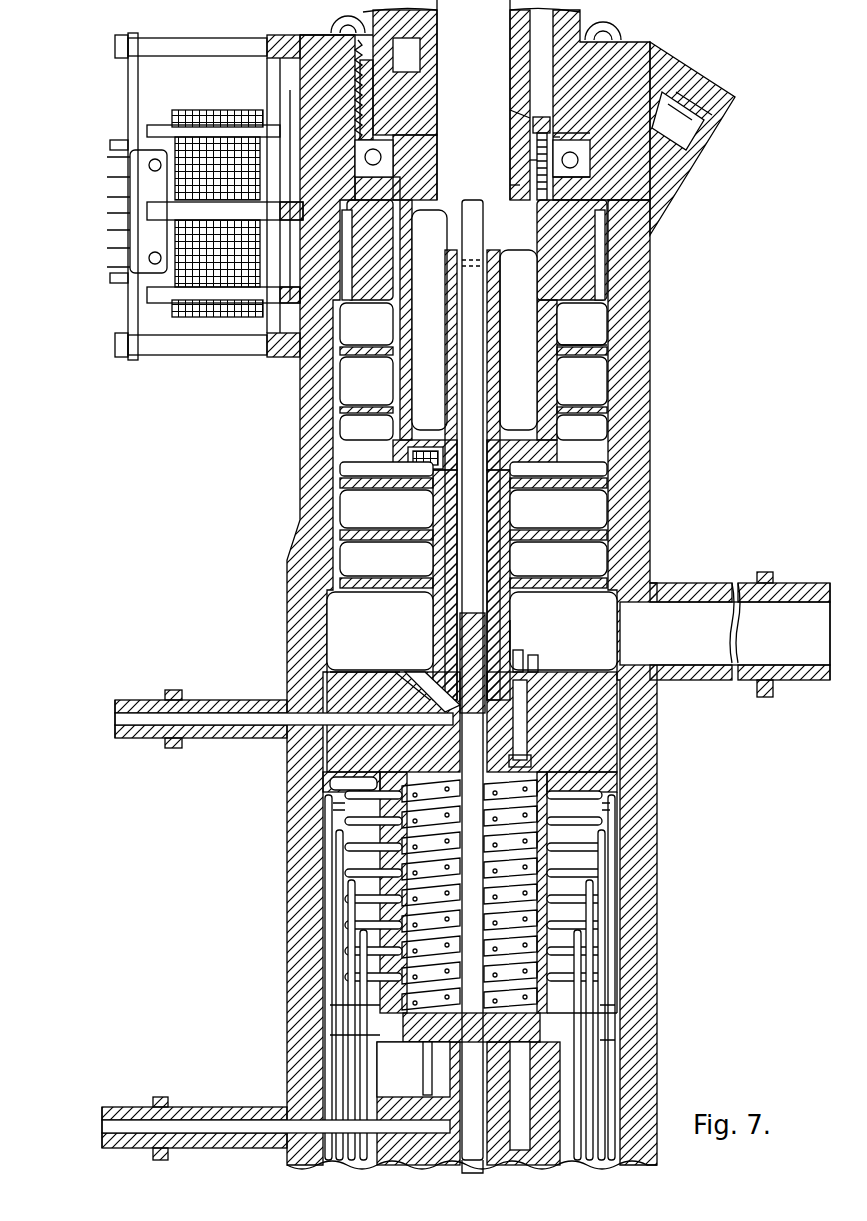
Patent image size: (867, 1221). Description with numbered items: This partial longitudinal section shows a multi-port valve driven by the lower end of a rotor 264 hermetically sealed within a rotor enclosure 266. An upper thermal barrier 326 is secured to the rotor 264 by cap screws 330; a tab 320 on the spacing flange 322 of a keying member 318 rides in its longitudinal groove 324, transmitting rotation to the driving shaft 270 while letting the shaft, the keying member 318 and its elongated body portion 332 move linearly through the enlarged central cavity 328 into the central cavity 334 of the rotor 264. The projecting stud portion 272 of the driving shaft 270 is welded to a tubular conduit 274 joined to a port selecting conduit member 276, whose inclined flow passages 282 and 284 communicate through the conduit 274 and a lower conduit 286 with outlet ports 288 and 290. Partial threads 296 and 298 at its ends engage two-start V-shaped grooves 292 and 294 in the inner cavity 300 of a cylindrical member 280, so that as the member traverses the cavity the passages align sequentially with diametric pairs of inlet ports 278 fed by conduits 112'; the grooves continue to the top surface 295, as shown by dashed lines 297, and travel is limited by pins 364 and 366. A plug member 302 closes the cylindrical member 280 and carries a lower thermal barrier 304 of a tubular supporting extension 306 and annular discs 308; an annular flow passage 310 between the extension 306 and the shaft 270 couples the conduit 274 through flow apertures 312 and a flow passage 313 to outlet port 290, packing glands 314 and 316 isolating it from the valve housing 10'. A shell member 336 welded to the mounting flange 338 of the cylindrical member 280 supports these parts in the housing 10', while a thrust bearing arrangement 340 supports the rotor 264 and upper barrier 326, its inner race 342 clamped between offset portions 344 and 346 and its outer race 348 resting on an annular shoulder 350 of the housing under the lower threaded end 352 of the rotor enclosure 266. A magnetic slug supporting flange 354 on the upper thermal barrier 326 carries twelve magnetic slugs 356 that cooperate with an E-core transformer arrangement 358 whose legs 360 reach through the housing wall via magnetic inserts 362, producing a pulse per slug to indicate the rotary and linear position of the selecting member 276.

The valve housing 10' is at (511, 588).
The conduits 112' is at (477, 807).
The rotor 264 is at (657, 22).
The rotor enclosure 266 is at (340, 20).
The driving shaft 270 is at (478, 503).
The projecting stud portion 272 is at (492, 648).
The tubular conduit 274 is at (540, 758).
The port selecting conduit member 276 is at (520, 1060).
The inlet ports 278 is at (605, 795).
The cylindrical member 280 is at (612, 838).
The inclined flow passage 282 is at (420, 1062).
The inclined flow passage 284 is at (600, 1020).
The conduit 286 is at (470, 1166).
The outlet port 288 is at (190, 1106).
The outlet port 290 is at (232, 740).
The V-shaped groove 292 is at (548, 960).
The V-shaped groove 294 is at (330, 977).
The top surface 295 is at (380, 672).
The partial threads 296 is at (330, 1005).
The dashed lines 297 is at (540, 662).
The partial threads 298 is at (330, 1036).
The inner cavity 300 is at (587, 887).
The plug member 302 is at (392, 657).
The thermal barrier 304 is at (563, 563).
The tubular supporting extension 306 is at (513, 625).
The annular discs 308 is at (403, 522).
The annular flow passage 310 is at (490, 603).
The flow apertures 312 is at (437, 673).
The flow passage 313 is at (392, 680).
The packing gland 314 is at (400, 459).
The packing gland 316 is at (533, 727).
The keying member 318 is at (540, 303).
The tab 320 is at (396, 430).
The spacing flange 322 is at (512, 420).
The longitudinal groove 324 is at (400, 370).
The upper thermal barrier 326 is at (600, 343).
The central cavity 328 is at (527, 318).
The cap screws 330 is at (530, 117).
The elongated body portion 332 is at (528, 237).
The central cavity 334 is at (497, 88).
The shell member 336 is at (324, 779).
The mounting flange 338 is at (612, 723).
The thrust bearing arrangement 340 is at (636, 145).
The inner race 342 is at (530, 161).
The offset portion 344 is at (527, 137).
The offset portion 346 is at (513, 185).
The outer race 348 is at (590, 157).
The annular shoulder 350 is at (585, 186).
The lower threaded end 352 is at (372, 121).
The magnetic slug supporting flange 354 is at (382, 243).
The magnetic slugs 356 is at (348, 222).
The E-core transformer arrangement 358 is at (128, 185).
The legs 360 is at (185, 214).
The magnetic inserts 362 is at (318, 292).
The pin 364 is at (400, 762).
The pin 366 is at (425, 1090).